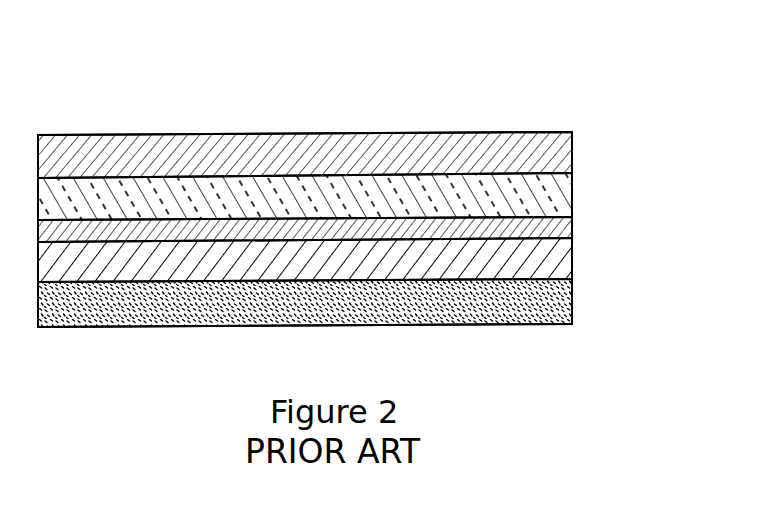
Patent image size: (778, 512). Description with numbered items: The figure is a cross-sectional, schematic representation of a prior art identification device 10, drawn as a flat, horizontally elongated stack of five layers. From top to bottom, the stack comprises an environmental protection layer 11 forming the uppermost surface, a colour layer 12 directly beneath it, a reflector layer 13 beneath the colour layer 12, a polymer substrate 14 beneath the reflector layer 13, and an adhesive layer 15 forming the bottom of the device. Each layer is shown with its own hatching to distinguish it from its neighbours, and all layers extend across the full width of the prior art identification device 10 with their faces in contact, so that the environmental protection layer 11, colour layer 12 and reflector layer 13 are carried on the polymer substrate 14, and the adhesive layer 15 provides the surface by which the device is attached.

The prior art identification device 10 is at (490, 96).
The environmental protection layer 11 is at (532, 155).
The colour layer 12 is at (547, 198).
The reflector layer 13 is at (547, 225).
The polymer substrate 14 is at (552, 263).
The adhesive layer 15 is at (532, 303).